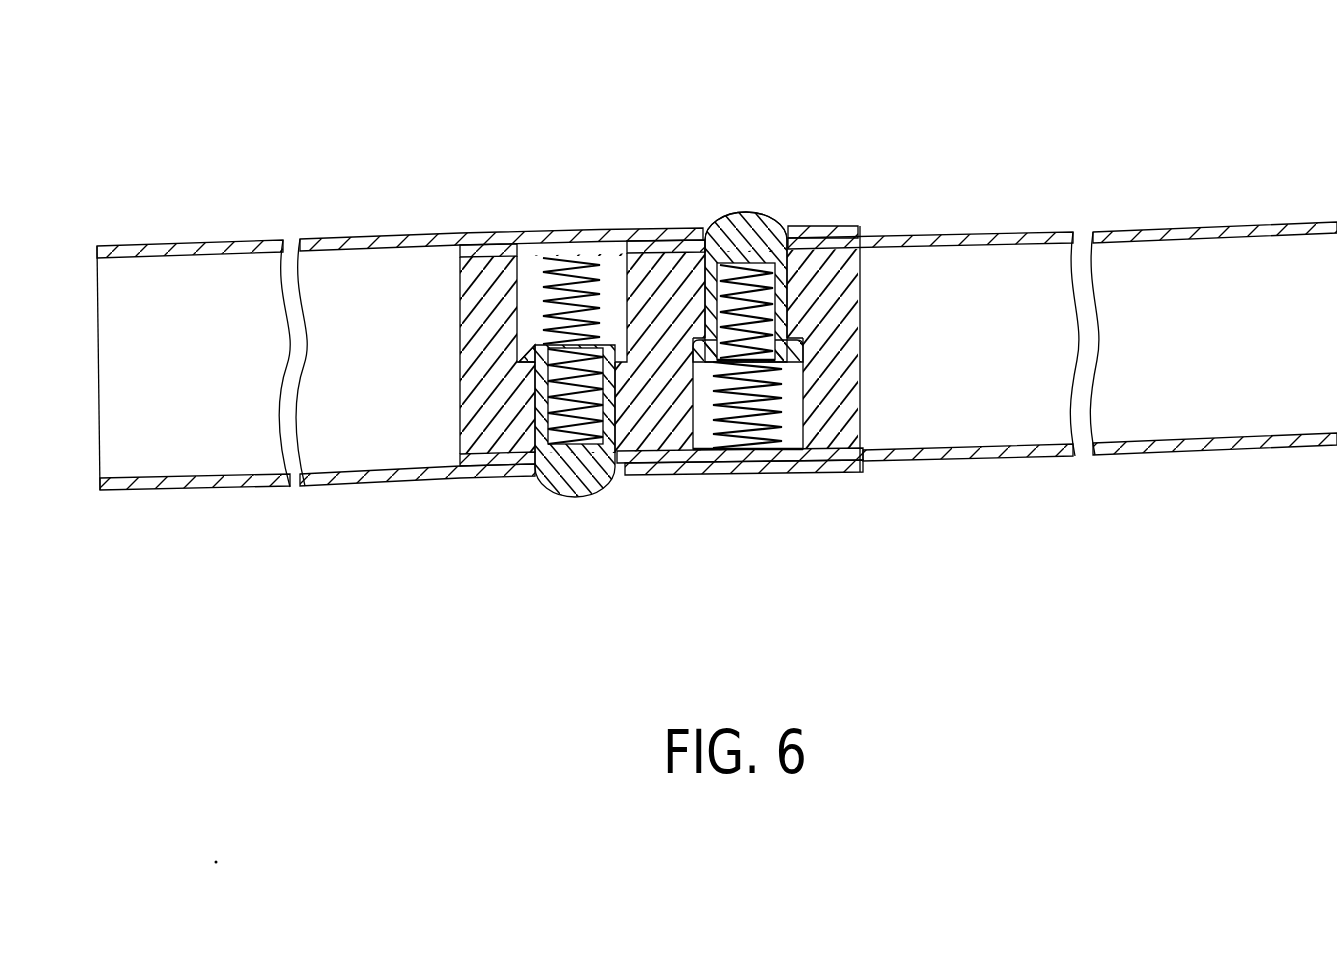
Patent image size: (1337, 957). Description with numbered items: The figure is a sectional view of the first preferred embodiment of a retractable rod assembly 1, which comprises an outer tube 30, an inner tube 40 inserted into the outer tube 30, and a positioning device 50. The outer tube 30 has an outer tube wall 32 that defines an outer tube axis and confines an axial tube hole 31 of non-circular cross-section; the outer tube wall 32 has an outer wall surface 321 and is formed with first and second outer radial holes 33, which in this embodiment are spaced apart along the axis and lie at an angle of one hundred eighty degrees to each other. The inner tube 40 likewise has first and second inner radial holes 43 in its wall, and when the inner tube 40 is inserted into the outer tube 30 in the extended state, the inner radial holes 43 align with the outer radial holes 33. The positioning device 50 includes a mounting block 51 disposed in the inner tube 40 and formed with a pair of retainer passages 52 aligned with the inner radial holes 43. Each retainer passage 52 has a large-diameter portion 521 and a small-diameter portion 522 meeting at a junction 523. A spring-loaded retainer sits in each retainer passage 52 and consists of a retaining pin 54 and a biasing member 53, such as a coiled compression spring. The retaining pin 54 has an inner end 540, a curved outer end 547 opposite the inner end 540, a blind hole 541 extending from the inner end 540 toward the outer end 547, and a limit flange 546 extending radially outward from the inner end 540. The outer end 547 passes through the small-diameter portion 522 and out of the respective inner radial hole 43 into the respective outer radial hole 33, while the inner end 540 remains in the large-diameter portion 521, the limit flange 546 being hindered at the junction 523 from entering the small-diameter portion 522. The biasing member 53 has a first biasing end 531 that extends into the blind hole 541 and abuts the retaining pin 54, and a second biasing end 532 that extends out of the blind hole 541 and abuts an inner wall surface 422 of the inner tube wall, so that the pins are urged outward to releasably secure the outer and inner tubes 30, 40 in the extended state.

The retractable rod assembly 1 is at (978, 167).
The outer tube 30 is at (335, 492).
The axial tube hole 31 is at (374, 455).
The outer tube wall 32 is at (318, 247).
The outer wall surface 321 is at (397, 233).
The outer radial holes 33 is at (680, 240).
The inner tube 40 is at (1032, 231).
The inner radial holes 43 is at (838, 240).
The inner wall surface 422 is at (803, 463).
The positioning device 50 is at (868, 310).
The mounting block 51 is at (461, 257).
The retainer passages 52 is at (534, 285).
The large-diameter portion 521 is at (498, 275).
The small-diameter portion 522 is at (535, 430).
The junction 523 is at (517, 362).
The biasing member 53 is at (772, 445).
The first biasing end 531 is at (767, 262).
The second biasing end 532 is at (745, 450).
The retaining pin 54 is at (733, 228).
The inner end 540 is at (795, 345).
The blind hole 541 is at (767, 302).
The limit flange 546 is at (672, 450).
The curved outer end 547 is at (740, 213).